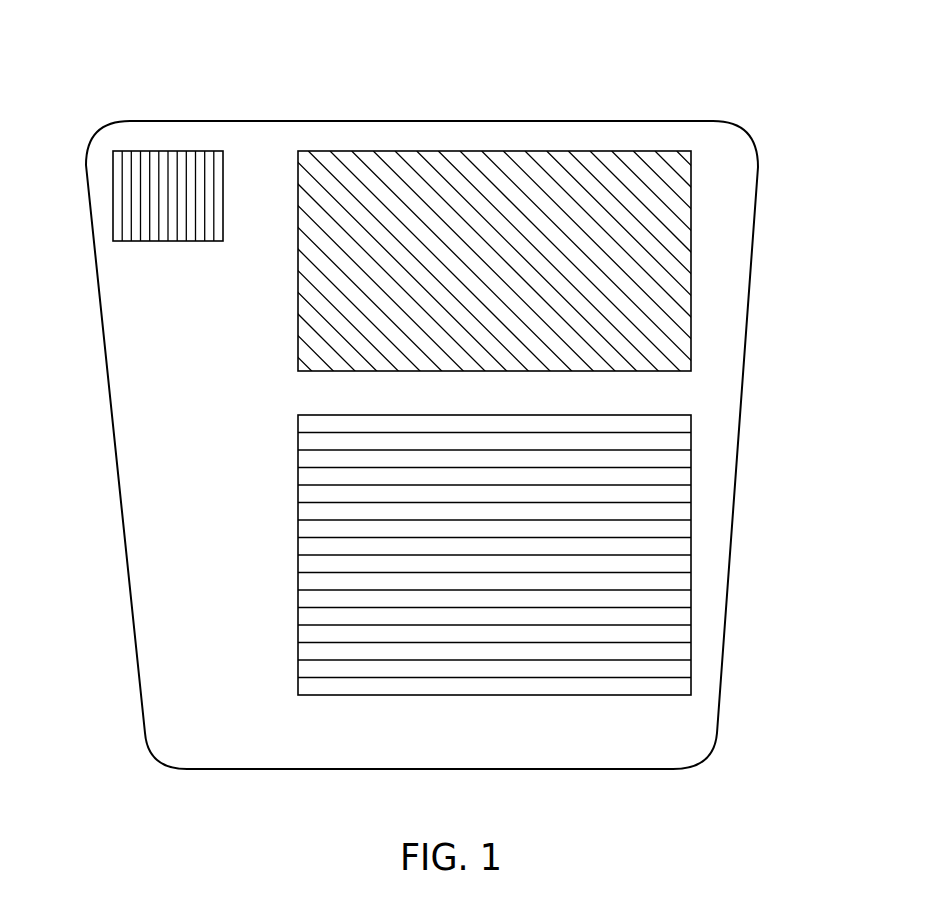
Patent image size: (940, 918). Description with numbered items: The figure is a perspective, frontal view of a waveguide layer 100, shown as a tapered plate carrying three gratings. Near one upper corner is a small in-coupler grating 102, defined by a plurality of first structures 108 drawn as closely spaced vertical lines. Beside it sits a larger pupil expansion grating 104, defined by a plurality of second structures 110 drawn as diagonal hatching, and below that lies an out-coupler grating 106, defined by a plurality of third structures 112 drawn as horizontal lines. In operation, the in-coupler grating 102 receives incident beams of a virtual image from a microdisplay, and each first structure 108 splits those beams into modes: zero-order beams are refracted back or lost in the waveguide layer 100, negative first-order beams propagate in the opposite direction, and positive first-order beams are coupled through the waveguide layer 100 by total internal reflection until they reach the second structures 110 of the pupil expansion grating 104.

The waveguide layer 100 is at (820, 72).
The in-coupler grating 102 is at (157, 137).
The pupil expansion grating 104 is at (507, 137).
The out-coupler grating 106 is at (576, 712).
The first structures 108 is at (218, 165).
The second structures 110 is at (670, 245).
The third structures 112 is at (677, 563).